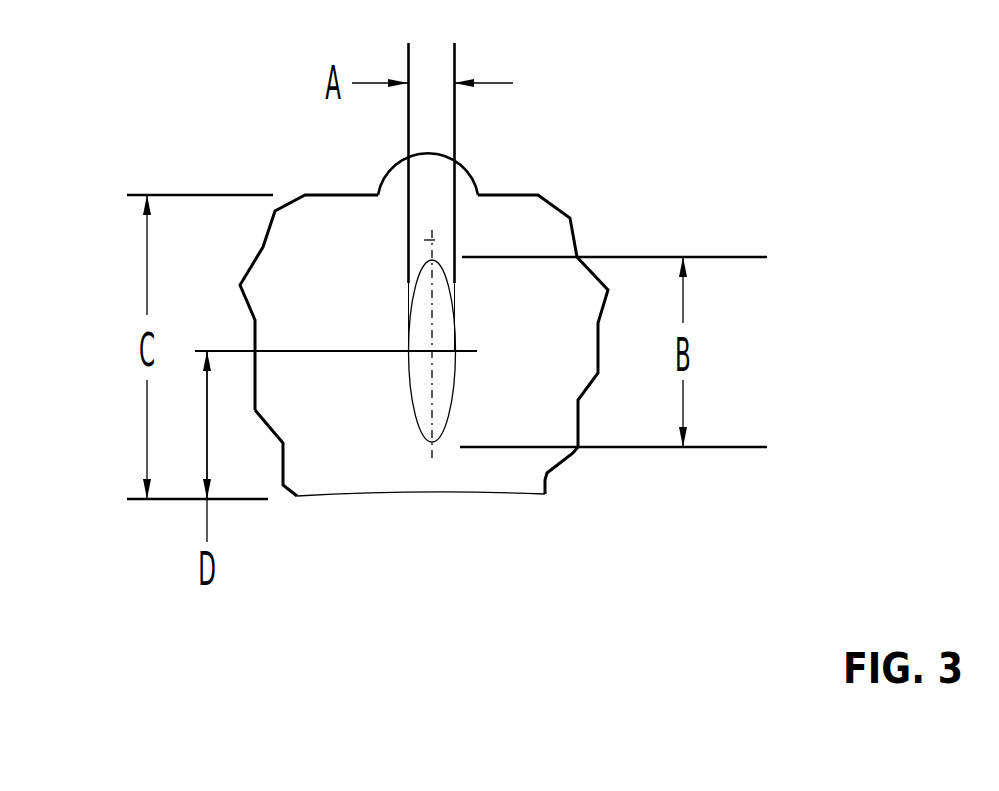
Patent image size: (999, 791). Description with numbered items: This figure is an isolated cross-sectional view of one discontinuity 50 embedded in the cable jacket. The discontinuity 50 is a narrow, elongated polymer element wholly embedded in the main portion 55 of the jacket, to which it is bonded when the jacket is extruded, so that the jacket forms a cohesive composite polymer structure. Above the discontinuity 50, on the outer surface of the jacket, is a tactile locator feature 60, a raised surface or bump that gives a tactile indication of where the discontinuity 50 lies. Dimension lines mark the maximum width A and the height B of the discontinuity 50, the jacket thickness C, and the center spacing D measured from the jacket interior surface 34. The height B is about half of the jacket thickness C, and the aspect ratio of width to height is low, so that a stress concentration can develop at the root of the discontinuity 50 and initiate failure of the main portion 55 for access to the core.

The tactile locator feature 60 is at (387, 185).
The discontinuity 50 is at (487, 250).
The main portion of the jacket 55 is at (357, 472).
The jacket interior surface 34 is at (443, 493).